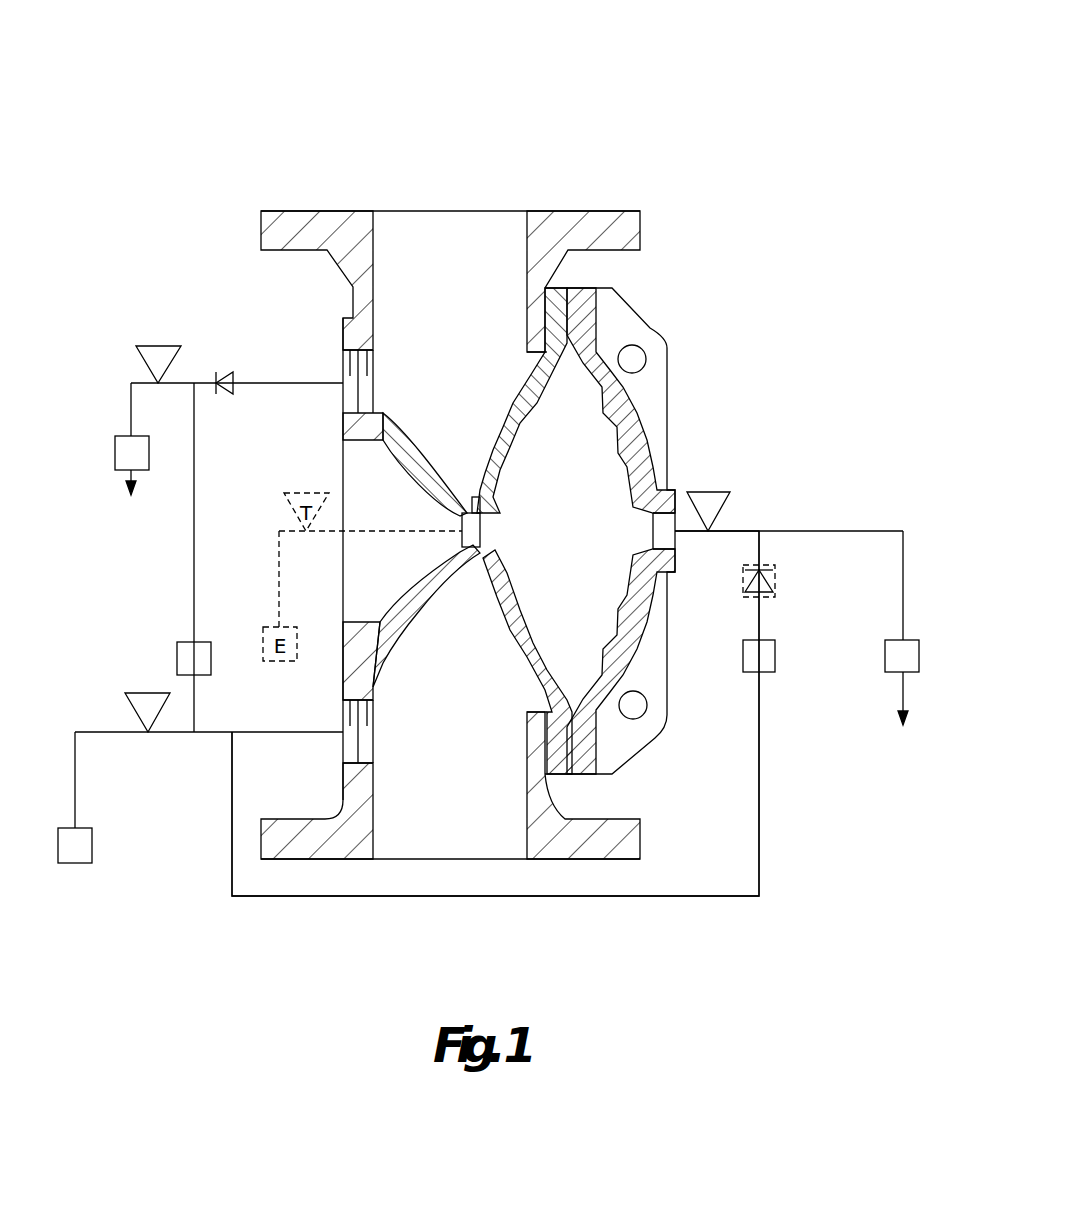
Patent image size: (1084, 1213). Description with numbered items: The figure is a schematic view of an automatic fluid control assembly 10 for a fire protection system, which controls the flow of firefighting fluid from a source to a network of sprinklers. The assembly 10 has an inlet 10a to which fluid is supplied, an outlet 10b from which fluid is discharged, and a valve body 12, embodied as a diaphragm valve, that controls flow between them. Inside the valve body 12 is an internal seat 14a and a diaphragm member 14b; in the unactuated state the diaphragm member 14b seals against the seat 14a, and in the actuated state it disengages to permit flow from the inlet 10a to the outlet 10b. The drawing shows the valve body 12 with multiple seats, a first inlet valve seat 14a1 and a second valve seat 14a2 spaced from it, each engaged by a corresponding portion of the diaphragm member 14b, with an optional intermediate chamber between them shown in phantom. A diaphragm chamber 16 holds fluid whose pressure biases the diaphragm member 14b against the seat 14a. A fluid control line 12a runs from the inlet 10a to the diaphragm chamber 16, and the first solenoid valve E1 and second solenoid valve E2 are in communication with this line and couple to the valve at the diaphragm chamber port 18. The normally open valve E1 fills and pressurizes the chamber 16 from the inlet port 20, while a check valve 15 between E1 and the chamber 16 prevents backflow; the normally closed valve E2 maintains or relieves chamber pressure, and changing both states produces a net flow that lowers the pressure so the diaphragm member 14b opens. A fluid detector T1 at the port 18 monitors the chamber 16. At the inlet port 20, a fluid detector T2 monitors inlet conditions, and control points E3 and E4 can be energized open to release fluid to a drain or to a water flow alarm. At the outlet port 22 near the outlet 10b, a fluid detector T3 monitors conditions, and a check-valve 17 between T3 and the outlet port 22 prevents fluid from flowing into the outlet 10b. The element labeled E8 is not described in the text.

The fluid control assembly 10 is at (765, 97).
The inlet 10a is at (490, 878).
The outlet 10b is at (480, 185).
The valve body 12 is at (590, 210).
The fluid control line 12a is at (263, 898).
The internal seat 14a is at (472, 555).
The first inlet valve seat 14a1 is at (490, 600).
The second valve seat 14a2 is at (480, 510).
The diaphragm member 14b is at (514, 606).
The check valve 15 is at (775, 562).
The diaphragm chamber 16 is at (588, 459).
The check-valve 17 is at (222, 372).
The diaphragm chamber port 18 is at (683, 547).
The inlet port 20 is at (329, 748).
The outlet port 22 is at (329, 366).
The fluid detector T1 is at (708, 492).
The fluid detector T2 is at (148, 693).
The fluid detector T3 is at (158, 346).
The first electrically controlled solenoid valve E1 is at (743, 655).
The second electrically operated solenoid valve E2 is at (885, 648).
The electrically controlled point E3 is at (92, 845).
The electrically controlled point E4 is at (212, 660).
The electrode E8 is at (115, 452).